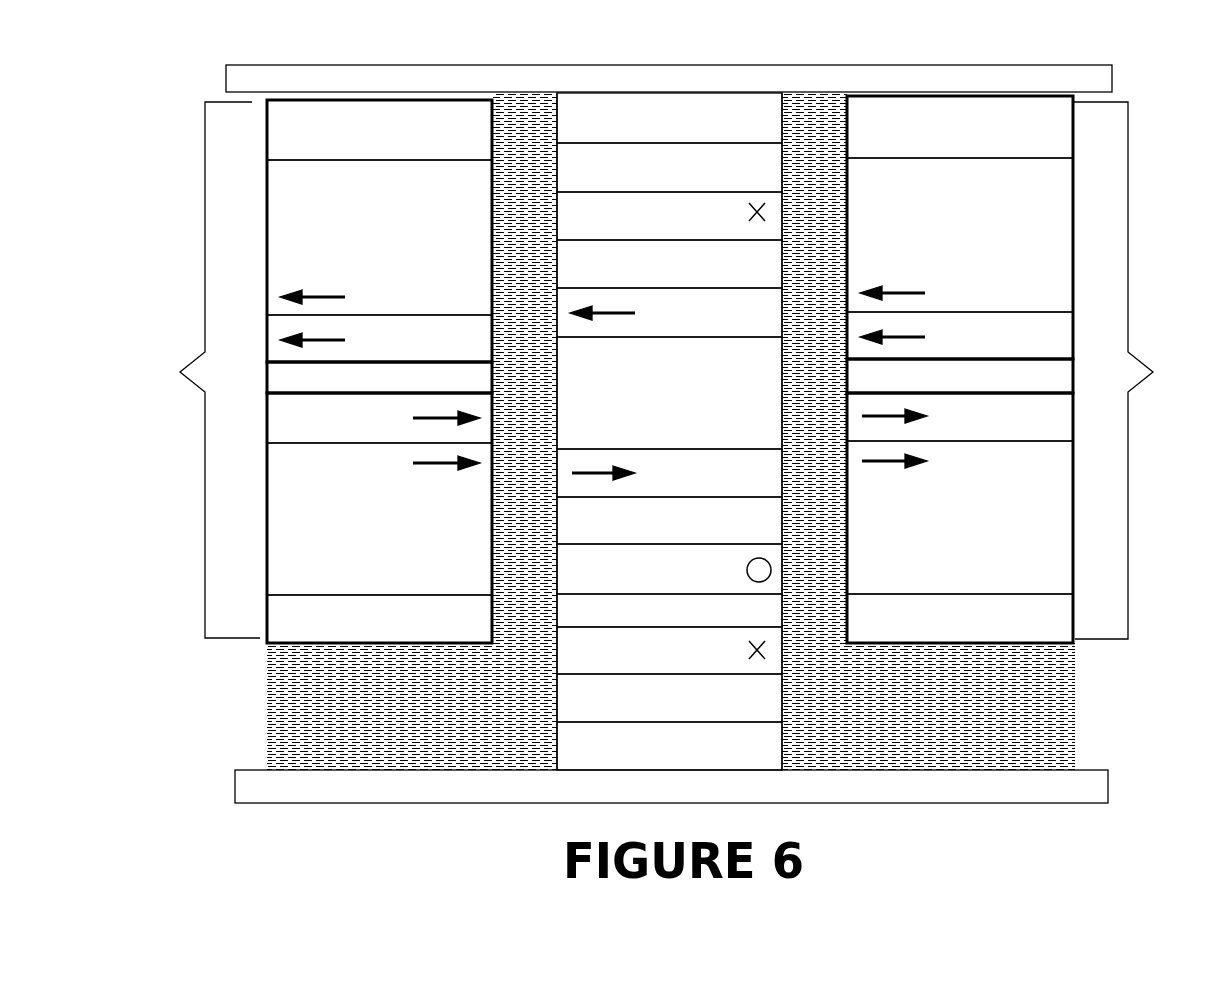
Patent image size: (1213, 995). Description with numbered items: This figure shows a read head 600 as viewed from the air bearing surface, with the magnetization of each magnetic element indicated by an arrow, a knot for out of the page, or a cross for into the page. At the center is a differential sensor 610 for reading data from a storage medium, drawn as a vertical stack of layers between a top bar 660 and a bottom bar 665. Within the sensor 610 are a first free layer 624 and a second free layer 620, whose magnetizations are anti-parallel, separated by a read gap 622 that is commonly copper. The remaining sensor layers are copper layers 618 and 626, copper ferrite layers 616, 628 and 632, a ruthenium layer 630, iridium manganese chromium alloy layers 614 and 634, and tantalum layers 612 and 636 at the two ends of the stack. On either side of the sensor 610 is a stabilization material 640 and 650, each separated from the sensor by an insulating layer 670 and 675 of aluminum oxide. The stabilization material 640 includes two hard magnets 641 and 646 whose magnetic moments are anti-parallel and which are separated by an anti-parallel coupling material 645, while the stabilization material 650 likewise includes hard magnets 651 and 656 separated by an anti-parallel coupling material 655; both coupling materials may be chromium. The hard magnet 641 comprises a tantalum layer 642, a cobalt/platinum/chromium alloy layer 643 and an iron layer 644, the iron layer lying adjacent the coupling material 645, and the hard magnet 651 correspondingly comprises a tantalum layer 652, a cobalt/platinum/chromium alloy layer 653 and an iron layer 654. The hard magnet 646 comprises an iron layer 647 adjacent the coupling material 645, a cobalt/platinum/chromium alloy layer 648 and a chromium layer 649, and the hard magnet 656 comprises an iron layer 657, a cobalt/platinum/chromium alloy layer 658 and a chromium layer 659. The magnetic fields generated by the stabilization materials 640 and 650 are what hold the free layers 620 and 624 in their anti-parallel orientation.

The read head 600 is at (119, 80).
The differential sensor 610 is at (558, 722).
The tantalum layer 612 is at (649, 130).
The iridium manganese chromium alloy layer 614 is at (649, 180).
The copper ferrite layer 616 is at (649, 228).
The copper layer 618 is at (649, 276).
The second free layer 620 is at (649, 325).
The read gap 622 is at (649, 405).
The first free layer 624 is at (649, 485).
The copper layer 626 is at (649, 533).
The copper ferrite layer 628 is at (649, 581).
The ruthenium layer 630 is at (649, 623).
The copper ferrite layer 632 is at (649, 663).
The iridium manganese chromium alloy layer 634 is at (649, 710).
The tantalum layer 636 is at (649, 758).
The stabilization material 640 is at (315, 371).
The hard magnet 641 is at (265, 222).
The tantalum layer 642 is at (361, 142).
The cobalt/platinum/chromium alloy layer 643 is at (361, 249).
The iron layer 644 is at (361, 350).
The anti-parallel coupling material 645 is at (361, 389).
The hard magnet 646 is at (266, 521).
The iron layer 647 is at (361, 430).
The cobalt/platinum/chromium alloy layer 648 is at (361, 531).
The chromium layer 649 is at (361, 631).
The stabilization material 650 is at (1021, 369).
The hard magnet 651 is at (1072, 233).
The tantalum layer 652 is at (939, 139).
The cobalt/platinum/chromium alloy layer 653 is at (939, 247).
The iron layer 654 is at (939, 347).
The anti-parallel coupling material 655 is at (939, 388).
The hard magnet 656 is at (1073, 520).
The iron layer 657 is at (939, 429).
The cobalt/platinum/chromium alloy layer 658 is at (939, 529).
The chromium layer 659 is at (939, 630).
The top electrode 660 is at (649, 89).
The bottom electrode 665 is at (653, 796).
The insulating layer 670 is at (266, 688).
The insulating layer 675 is at (1075, 685).